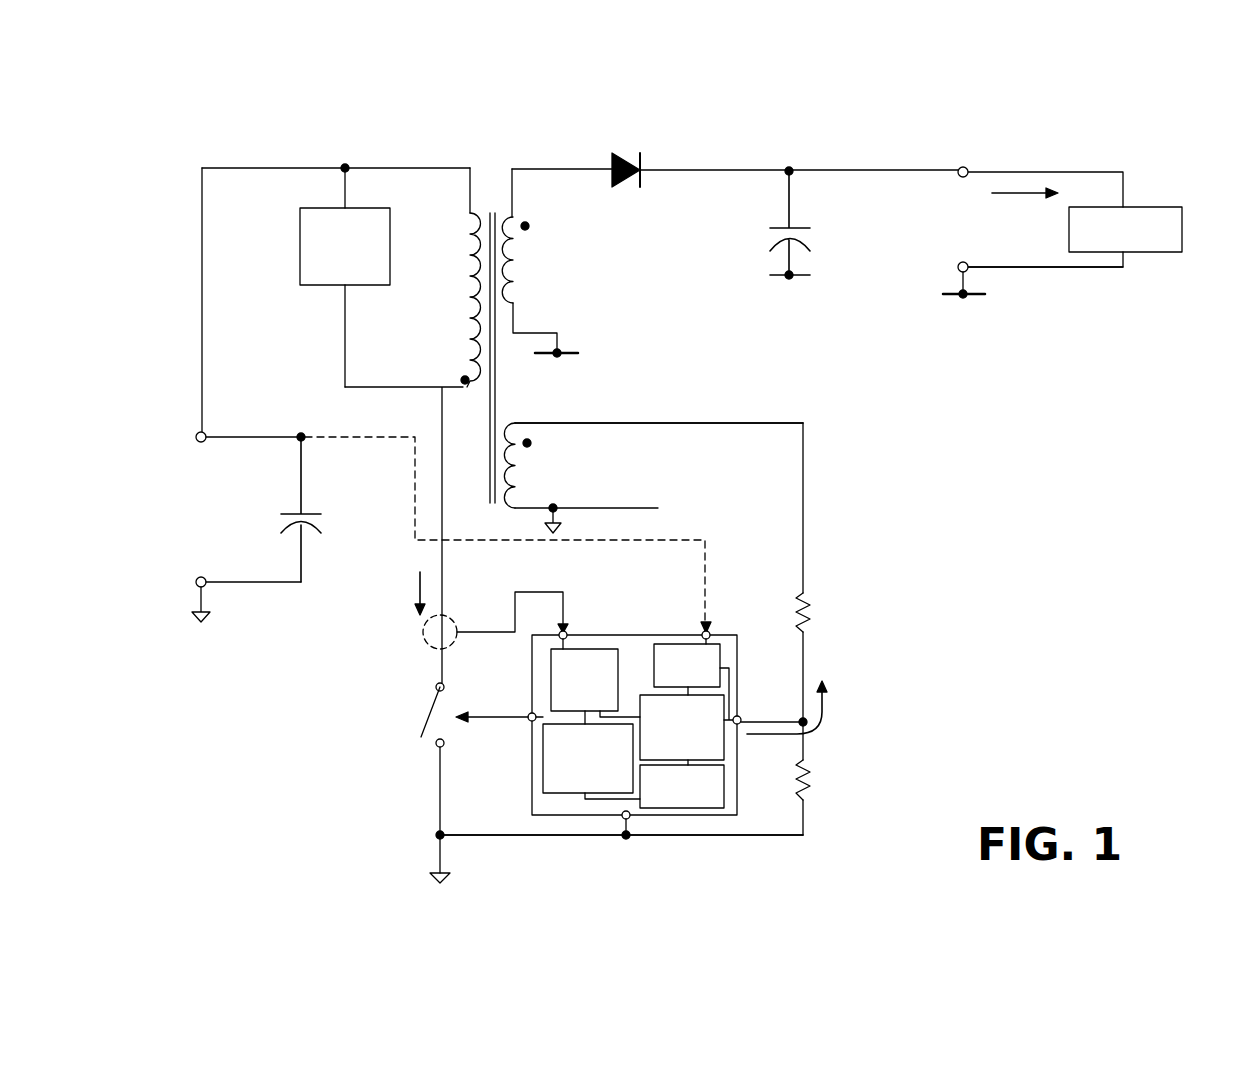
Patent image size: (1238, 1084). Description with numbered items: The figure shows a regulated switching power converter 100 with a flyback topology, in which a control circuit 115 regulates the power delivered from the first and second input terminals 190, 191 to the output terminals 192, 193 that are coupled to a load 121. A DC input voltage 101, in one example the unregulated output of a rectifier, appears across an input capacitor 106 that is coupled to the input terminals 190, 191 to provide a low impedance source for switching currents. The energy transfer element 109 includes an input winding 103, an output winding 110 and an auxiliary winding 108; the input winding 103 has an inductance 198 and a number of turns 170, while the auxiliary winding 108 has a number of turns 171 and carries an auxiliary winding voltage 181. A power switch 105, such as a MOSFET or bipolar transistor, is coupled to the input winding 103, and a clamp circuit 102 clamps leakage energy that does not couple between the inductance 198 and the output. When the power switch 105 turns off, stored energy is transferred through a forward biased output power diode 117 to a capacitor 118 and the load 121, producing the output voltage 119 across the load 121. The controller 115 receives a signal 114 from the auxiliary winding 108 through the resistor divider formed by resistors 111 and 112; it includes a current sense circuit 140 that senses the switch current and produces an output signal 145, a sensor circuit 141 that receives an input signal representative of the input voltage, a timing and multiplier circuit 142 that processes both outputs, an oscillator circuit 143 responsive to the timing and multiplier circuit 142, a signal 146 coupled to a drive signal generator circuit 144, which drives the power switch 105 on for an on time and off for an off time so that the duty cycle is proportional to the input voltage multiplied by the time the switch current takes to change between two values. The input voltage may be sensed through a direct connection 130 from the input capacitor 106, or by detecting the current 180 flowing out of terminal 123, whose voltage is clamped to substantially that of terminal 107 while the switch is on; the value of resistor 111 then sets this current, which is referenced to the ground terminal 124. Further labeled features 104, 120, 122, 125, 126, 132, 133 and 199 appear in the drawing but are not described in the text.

The switching power converter 100 is at (192, 113).
The DC input voltage 101 is at (170, 527).
The clamp circuit 102 is at (317, 298).
The input winding 103 is at (465, 230).
The drain current 104 is at (413, 590).
The power switch 105 is at (428, 703).
The input capacitor 106 is at (287, 508).
The terminal 107 is at (448, 878).
The auxiliary winding 108 is at (520, 478).
The energy transfer element 109 is at (493, 163).
The output winding 110 is at (513, 263).
The resistor 111 is at (795, 594).
The resistor 112 is at (828, 775).
The signal 114 is at (765, 717).
The control circuit 115 is at (650, 628).
The output power diode 117 is at (633, 188).
The capacitor 118 is at (805, 220).
The output voltage 119 is at (890, 250).
The output return 120 is at (1022, 268).
The load 121 is at (1142, 200).
The drive signal 122 is at (503, 722).
The terminal 123 is at (743, 707).
The ground terminal 124 is at (620, 828).
The drive terminal 125 is at (527, 712).
The output capacitor terminal 126 is at (788, 283).
The direct connection 130 is at (337, 442).
The switch drain terminal 132 is at (495, 638).
The current sense signal 133 is at (455, 612).
The current sense circuit 140 is at (570, 650).
The sensor circuit 141 is at (715, 632).
The timing and multiplier circuit 142 is at (727, 746).
The oscillator circuit 143 is at (705, 810).
The drive signal generator circuit 144 is at (550, 795).
The output signal 145 is at (627, 714).
The signal 146 is at (635, 805).
The input winding turns N_I 170 is at (437, 333).
The auxiliary winding turns N_AUX 171 is at (602, 453).
The current I1 180 is at (852, 690).
The auxiliary winding voltage 181 is at (682, 460).
The first input terminal 190 is at (190, 448).
The second input terminal 191 is at (190, 598).
The output terminal 192 is at (968, 170).
The output terminal 193 is at (945, 272).
The inductance L_I 198 is at (383, 167).
The output current 199 is at (1095, 168).